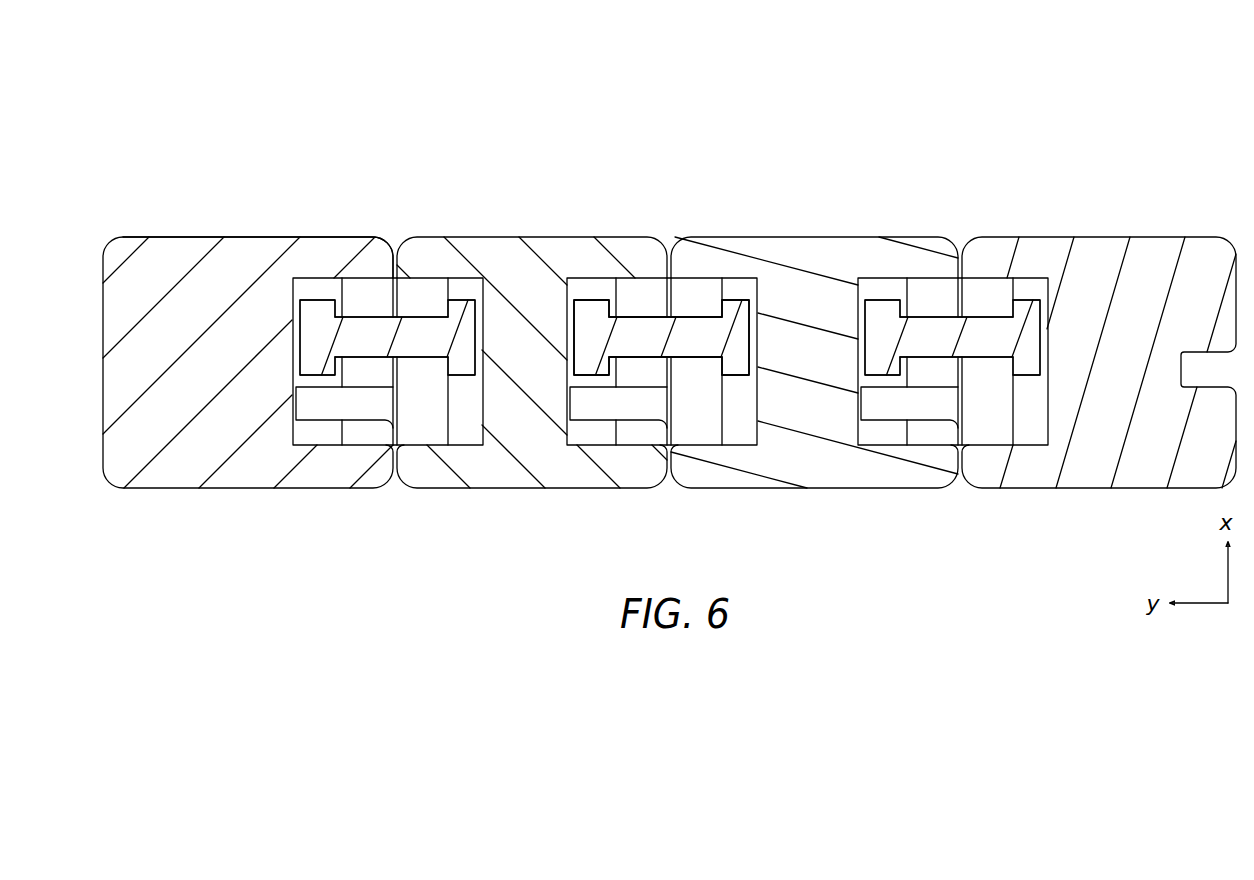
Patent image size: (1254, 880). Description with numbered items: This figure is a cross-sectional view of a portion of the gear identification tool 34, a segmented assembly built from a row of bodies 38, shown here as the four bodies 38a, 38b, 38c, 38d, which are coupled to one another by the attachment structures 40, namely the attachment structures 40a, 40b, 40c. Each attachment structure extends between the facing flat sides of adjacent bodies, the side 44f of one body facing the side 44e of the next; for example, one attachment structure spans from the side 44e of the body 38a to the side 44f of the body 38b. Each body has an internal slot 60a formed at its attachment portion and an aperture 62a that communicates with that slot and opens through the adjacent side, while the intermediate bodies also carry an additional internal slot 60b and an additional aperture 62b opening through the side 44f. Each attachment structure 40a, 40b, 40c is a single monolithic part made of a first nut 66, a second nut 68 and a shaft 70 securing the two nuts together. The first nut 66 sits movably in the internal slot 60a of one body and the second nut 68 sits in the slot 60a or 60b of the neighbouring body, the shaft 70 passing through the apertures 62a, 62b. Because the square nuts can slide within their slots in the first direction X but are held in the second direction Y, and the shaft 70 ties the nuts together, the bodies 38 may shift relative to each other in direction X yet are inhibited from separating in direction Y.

The gear identification tool 34 is at (583, 75).
The bodies 38 is at (318, 199).
The body 38a is at (1164, 233).
The body 38b is at (827, 226).
The body 38c is at (515, 224).
The body 38d is at (190, 225).
The attachment structures 40 is at (774, 346).
The attachment structure 40a is at (976, 350).
The attachment structure 40b is at (700, 360).
The attachment structure 40c is at (391, 310).
The side 44e is at (682, 238).
The side 44f is at (655, 238).
The internal slot 60a is at (462, 287).
The internal slot 60b is at (592, 287).
The aperture 62a is at (361, 290).
The aperture 62b is at (637, 287).
The first nut 66 is at (460, 340).
The second nut 68 is at (310, 347).
The shaft 70 is at (387, 343).